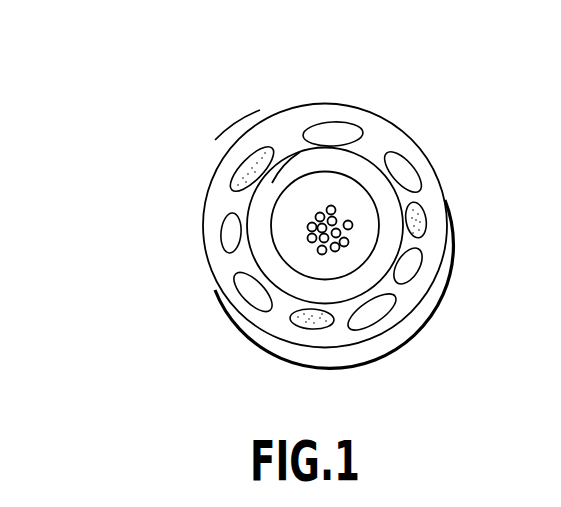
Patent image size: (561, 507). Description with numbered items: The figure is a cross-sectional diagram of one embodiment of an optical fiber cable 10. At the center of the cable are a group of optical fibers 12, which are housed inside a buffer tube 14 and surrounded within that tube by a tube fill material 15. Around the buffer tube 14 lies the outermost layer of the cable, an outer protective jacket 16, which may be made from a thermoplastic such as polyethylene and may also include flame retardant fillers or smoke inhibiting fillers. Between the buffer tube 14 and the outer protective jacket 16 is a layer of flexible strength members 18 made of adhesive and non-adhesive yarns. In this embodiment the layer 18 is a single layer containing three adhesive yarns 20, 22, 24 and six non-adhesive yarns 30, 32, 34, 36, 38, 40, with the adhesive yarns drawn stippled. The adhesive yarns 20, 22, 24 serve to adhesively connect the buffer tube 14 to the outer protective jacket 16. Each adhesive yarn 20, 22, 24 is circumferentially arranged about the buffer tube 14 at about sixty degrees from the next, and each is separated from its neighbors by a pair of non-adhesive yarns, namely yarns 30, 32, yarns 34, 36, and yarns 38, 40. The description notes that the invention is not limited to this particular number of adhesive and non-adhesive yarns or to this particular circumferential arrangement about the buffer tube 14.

The optical fiber cable 10 is at (112, 50).
The optical fibers 12 is at (334, 253).
The buffer tube 14 is at (295, 171).
The tube fill material 15 is at (298, 260).
The outer protective jacket 16 is at (408, 295).
The layer of flexible strength members 18 is at (253, 145).
The adhesive yarn 20 is at (420, 217).
The adhesive yarn 22 is at (295, 318).
The adhesive yarn 24 is at (248, 163).
The non-adhesive yarn 30 is at (405, 268).
The non-adhesive yarn 32 is at (365, 317).
The non-adhesive yarn 34 is at (248, 283).
The non-adhesive yarn 36 is at (228, 223).
The non-adhesive yarn 38 is at (320, 130).
The non-adhesive yarn 40 is at (397, 165).